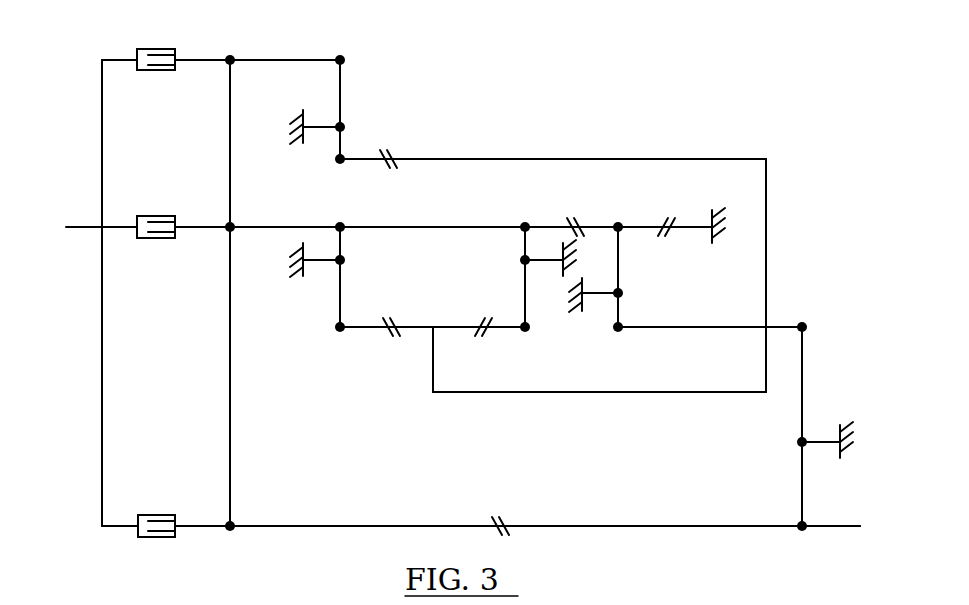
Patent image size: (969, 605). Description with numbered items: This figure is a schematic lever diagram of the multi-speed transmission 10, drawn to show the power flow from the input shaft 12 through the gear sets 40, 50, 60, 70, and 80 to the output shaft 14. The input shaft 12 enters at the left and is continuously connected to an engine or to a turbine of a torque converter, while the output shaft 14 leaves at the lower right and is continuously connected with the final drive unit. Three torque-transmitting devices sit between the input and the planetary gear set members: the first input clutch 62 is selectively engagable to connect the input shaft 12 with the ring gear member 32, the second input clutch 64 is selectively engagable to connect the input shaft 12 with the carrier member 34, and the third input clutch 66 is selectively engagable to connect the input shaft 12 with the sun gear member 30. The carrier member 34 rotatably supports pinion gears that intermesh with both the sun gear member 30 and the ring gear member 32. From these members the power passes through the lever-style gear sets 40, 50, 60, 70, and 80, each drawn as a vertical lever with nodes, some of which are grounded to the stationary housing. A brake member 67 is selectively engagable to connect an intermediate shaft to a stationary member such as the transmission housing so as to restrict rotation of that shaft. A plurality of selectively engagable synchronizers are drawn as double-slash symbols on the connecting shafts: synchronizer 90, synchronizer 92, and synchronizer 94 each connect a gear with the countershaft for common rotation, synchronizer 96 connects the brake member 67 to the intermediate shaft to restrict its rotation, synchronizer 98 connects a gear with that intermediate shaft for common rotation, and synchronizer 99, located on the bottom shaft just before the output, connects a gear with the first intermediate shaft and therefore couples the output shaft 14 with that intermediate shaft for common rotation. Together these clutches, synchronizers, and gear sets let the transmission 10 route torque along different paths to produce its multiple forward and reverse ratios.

The multi-speed transmission 10 is at (634, 116).
The input shaft 12 is at (76, 228).
The output shaft 14 is at (840, 528).
The sun gear member 30 is at (235, 523).
The ring gear member 32 is at (235, 57).
The carrier member 34 is at (235, 224).
The gear set 40 is at (364, 118).
The gear set 50 is at (372, 256).
The gear set 60 is at (494, 256).
The first input clutch 62 is at (170, 70).
The second input clutch 64 is at (175, 230).
The third input clutch 66 is at (170, 513).
The brake member 67 is at (680, 228).
The gear set 70 is at (634, 293).
The gear set 80 is at (778, 468).
The synchronizer 90 is at (392, 152).
The synchronizer 92 is at (388, 336).
The synchronizer 94 is at (480, 336).
The synchronizer 96 is at (665, 218).
The synchronizer 98 is at (575, 218).
The synchronizer 99 is at (497, 518).